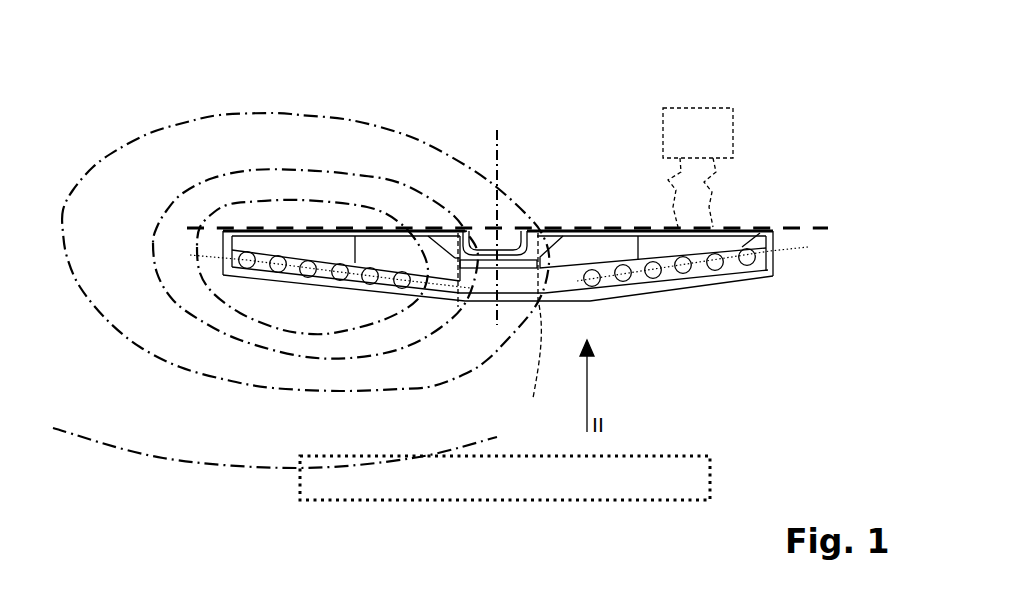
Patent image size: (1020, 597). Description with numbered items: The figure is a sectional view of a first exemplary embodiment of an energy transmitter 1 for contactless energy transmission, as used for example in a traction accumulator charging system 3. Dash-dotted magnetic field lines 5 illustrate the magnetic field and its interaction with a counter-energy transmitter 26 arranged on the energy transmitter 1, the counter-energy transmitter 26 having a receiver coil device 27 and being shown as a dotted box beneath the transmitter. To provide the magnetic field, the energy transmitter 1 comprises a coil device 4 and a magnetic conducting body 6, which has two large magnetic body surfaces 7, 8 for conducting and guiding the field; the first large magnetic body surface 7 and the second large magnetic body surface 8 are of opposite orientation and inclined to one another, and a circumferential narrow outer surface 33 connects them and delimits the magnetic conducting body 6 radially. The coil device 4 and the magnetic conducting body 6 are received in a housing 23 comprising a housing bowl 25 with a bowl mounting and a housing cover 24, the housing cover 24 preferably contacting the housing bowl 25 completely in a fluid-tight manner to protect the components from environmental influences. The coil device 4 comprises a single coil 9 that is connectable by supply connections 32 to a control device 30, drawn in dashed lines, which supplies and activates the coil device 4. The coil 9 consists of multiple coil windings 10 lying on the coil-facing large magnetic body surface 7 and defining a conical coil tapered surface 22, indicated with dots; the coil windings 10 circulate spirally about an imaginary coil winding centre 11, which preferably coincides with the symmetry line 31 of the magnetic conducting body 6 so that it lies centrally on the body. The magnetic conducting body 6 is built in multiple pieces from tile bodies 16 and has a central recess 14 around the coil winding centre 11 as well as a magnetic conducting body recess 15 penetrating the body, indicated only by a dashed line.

The energy transmitter 1 is at (779, 47).
The traction accumulator charging system 3 is at (779, 47).
The coil device 4 is at (741, 80).
The magnetic field lines 5 is at (333, 204).
The magnetic conducting body 6 is at (556, 237).
The first large magnetic body surface 7 is at (773, 276).
The second large magnetic body surface 8 is at (741, 231).
The coil 9 is at (745, 312).
The coil windings 10 is at (598, 287).
The coil winding centre 11 is at (558, 202).
The central recess 14 is at (503, 230).
The magnetic conducting body recess 15 is at (508, 328).
The tile bodies 16 is at (383, 250).
The conical coil tapered surface 22 is at (494, 250).
The housing 23 is at (152, 139).
The housing cover 24 is at (242, 230).
The housing bowl 25 is at (250, 277).
The counter-energy transmitter 26 is at (505, 478).
The receiver coil device 27 is at (545, 489).
The control device 30 is at (685, 147).
The symmetry line 31 is at (498, 143).
The supply connections 32 is at (647, 185).
The circumferential narrow outer surface 33 is at (222, 244).